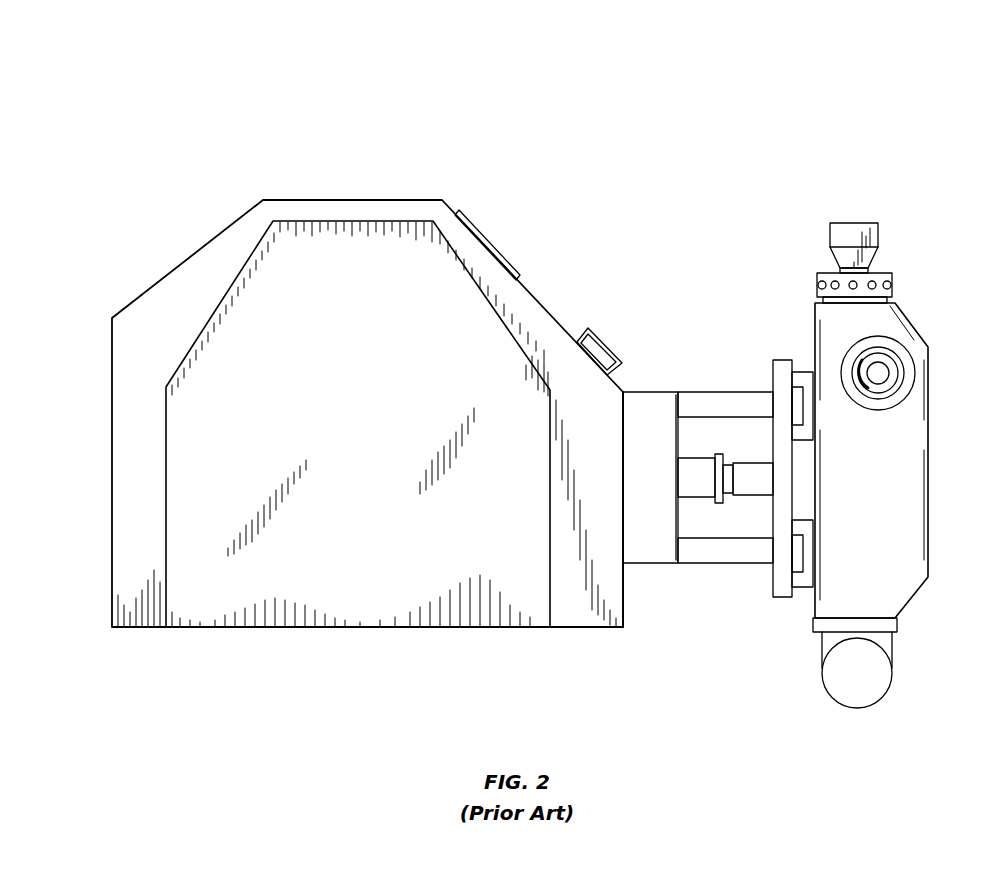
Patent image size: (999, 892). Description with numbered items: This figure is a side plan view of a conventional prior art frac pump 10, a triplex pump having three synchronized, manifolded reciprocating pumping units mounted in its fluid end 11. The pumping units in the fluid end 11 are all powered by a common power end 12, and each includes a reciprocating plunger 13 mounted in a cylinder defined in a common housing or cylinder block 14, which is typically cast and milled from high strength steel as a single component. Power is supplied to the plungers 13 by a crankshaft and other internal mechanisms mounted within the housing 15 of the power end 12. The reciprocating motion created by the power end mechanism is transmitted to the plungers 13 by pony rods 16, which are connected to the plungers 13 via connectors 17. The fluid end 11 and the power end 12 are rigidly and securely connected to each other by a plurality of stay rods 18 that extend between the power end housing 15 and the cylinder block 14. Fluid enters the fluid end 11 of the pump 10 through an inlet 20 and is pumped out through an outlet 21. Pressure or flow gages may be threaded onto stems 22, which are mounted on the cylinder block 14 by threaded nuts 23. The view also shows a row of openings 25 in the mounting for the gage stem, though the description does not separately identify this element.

The frac pump 10 is at (155, 113).
The fluid end 11 is at (934, 507).
The power end 12 is at (110, 463).
The reciprocating plungers 13 is at (763, 462).
The cylinder block 14 is at (910, 458).
The power end housing 15 is at (603, 597).
The pony rods 16 is at (692, 476).
The connectors 17 is at (720, 500).
The stay rods 18 is at (718, 402).
The inlet 20 is at (865, 688).
The outlet 21 is at (880, 362).
The stems 22 is at (855, 233).
The threaded nuts 23 is at (880, 272).
The holes 25 is at (822, 283).